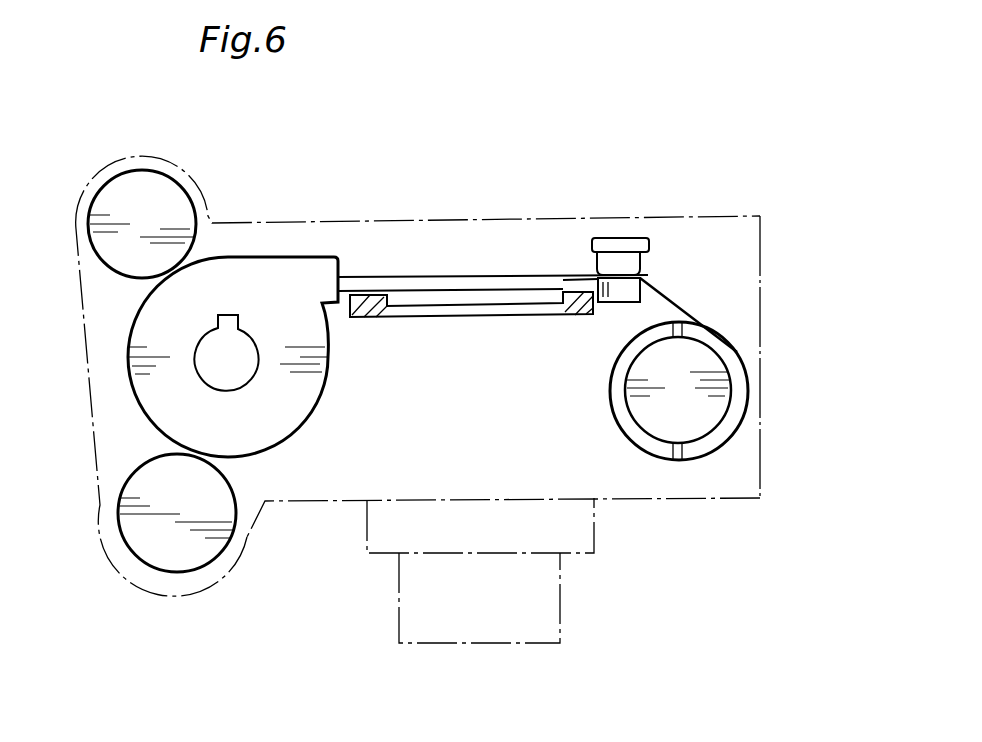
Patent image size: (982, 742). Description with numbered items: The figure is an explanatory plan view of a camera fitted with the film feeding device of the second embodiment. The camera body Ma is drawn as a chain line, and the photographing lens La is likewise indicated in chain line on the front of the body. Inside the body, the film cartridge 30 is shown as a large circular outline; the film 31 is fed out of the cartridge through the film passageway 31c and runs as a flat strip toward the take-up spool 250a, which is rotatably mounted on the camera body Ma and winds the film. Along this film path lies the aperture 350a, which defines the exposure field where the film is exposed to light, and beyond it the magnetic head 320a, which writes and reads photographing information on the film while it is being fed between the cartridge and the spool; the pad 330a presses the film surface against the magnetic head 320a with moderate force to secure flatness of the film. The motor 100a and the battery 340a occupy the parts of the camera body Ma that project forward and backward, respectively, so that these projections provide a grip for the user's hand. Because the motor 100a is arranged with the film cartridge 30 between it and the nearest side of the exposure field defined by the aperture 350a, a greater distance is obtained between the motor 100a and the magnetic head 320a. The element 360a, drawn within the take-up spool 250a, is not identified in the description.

The battery 340a is at (148, 197).
The film cartridge 30 is at (261, 303).
The film passageway 31c is at (338, 275).
The film 31 is at (388, 277).
The aperture 350a is at (563, 298).
The magnetic head 320a is at (628, 256).
The pad 330a is at (650, 278).
The take-up spool 250a is at (737, 352).
The roller 360a is at (700, 398).
The motor 100a is at (163, 533).
The camera body Ma is at (708, 498).
The photographing lens La is at (560, 617).